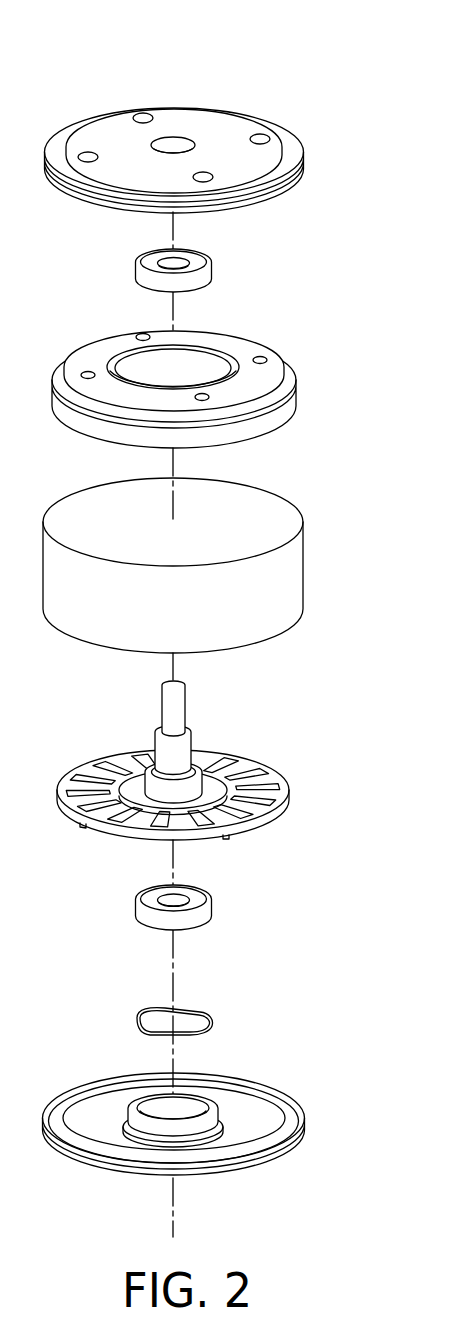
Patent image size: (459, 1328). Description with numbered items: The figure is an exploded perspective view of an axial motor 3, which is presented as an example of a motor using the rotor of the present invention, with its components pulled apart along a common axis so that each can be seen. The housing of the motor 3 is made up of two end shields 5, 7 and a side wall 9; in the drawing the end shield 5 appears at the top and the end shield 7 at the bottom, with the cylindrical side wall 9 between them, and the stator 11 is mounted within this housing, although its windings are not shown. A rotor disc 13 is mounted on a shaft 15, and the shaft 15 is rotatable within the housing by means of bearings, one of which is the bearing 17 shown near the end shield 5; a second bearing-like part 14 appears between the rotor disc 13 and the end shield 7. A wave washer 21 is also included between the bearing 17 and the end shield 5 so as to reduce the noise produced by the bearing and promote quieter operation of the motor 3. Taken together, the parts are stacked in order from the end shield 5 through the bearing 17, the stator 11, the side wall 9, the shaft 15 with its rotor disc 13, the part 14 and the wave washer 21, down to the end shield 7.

The axial motor 3 is at (219, 623).
The end shield 5 is at (303, 157).
The bearing 17 is at (212, 270).
The stator 11 is at (297, 372).
The side wall 9 is at (303, 565).
The shaft 15 is at (185, 702).
The rotor disc 13 is at (289, 788).
The lower bearing 14 is at (212, 905).
The wave washer 21 is at (208, 1018).
The end shield 7 is at (305, 1110).